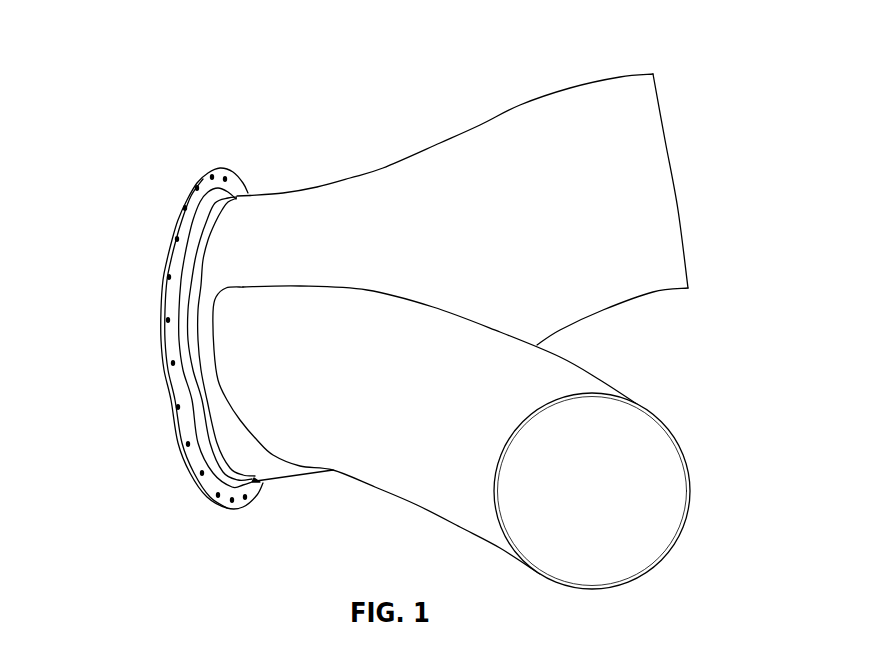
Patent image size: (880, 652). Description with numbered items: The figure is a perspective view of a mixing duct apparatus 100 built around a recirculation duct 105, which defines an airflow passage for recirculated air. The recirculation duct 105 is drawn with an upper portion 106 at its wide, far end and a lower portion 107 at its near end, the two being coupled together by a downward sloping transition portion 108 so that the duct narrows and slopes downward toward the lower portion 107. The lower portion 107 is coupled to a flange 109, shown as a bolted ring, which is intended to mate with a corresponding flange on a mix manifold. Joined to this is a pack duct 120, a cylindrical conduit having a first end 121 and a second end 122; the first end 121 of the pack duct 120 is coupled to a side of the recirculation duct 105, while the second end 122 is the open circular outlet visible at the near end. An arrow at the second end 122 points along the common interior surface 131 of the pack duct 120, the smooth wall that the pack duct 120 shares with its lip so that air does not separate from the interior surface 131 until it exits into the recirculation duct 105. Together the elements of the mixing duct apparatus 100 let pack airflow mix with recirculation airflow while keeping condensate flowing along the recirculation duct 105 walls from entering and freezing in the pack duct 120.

The mixing duct apparatus 100 is at (130, 105).
The recirculation duct 105 is at (520, 105).
The upper portion 106 is at (650, 75).
The lower portion 107 is at (252, 195).
The downward sloping transition portion 108 is at (440, 143).
The flange 109 is at (182, 454).
The pack duct 120 is at (417, 504).
The first end 121 is at (215, 306).
The second end 122 is at (663, 422).
The interior surface 131 is at (647, 493).